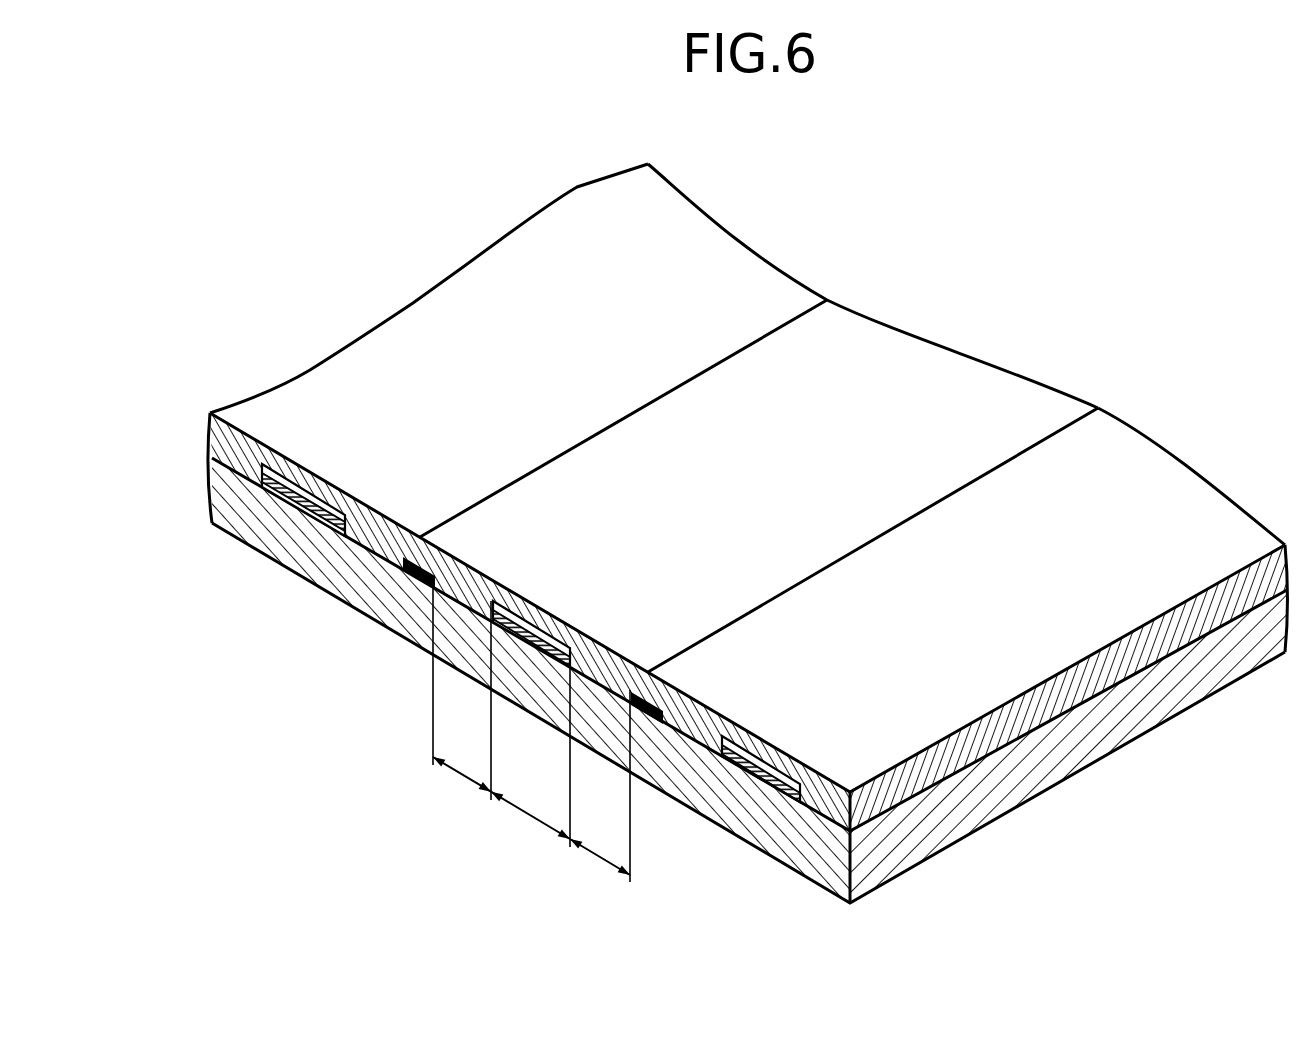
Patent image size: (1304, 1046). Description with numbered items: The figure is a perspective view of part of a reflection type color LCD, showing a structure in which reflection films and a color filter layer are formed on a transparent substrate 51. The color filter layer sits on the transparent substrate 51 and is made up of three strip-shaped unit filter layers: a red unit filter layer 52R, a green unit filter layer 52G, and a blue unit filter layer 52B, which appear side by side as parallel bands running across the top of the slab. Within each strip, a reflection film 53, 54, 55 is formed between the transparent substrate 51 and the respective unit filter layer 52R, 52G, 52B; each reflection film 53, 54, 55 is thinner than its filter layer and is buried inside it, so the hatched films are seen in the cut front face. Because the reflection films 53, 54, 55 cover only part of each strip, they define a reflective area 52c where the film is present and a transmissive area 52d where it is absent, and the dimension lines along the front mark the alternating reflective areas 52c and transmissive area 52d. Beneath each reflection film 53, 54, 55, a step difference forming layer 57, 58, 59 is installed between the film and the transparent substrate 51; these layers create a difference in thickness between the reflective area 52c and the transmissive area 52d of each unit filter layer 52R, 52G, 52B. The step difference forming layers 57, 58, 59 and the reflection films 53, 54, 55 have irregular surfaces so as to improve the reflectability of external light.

The transparent substrate 51 is at (745, 823).
The red unit filter layer 52R is at (495, 374).
The green unit filter layer 52G is at (705, 486).
The blue unit filter layer 52B is at (895, 618).
The reflective area 52c is at (531, 734).
The transmissive area 52d is at (530, 724).
The reflection film 53 is at (317, 480).
The reflection film 54 is at (553, 613).
The reflection film 55 is at (780, 747).
The step difference forming layer 57 is at (277, 477).
The step difference forming layer 58 is at (513, 607).
The step difference forming layer 59 is at (735, 728).